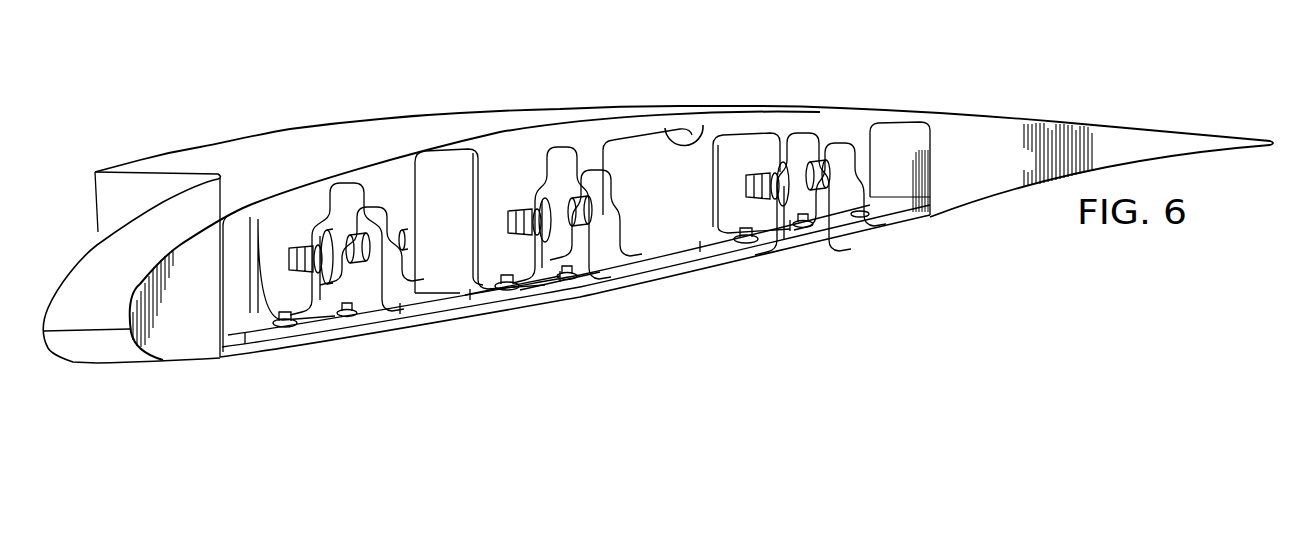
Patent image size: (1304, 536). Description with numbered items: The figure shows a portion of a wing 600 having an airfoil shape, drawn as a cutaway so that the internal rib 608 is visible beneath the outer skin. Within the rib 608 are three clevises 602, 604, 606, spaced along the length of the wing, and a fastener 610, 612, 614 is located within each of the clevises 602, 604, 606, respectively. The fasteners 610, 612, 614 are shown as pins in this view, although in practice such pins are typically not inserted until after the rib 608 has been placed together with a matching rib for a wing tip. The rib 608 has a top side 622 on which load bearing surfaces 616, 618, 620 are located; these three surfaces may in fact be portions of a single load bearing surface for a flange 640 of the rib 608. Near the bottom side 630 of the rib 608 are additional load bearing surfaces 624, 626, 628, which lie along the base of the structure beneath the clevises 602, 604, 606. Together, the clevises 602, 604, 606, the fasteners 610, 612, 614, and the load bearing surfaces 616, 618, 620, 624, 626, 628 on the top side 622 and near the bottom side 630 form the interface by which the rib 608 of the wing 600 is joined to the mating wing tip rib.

The wing 600 is at (178, 146).
The clevis 602 is at (392, 221).
The clevis 604 is at (638, 176).
The clevis 606 is at (850, 130).
The rib 608 is at (191, 346).
The fastener 610 is at (300, 262).
The fastener 612 is at (508, 225).
The fastener 614 is at (746, 188).
The load bearing surface 616 is at (370, 172).
The load bearing surface 618 is at (540, 140).
The load bearing surface 620 is at (780, 125).
The top side 622 is at (300, 128).
The load bearing surface 624 is at (330, 341).
The load bearing surface 626 is at (500, 314).
The load bearing surface 628 is at (738, 258).
The bottom side 630 is at (535, 304).
The flange 640 is at (683, 138).